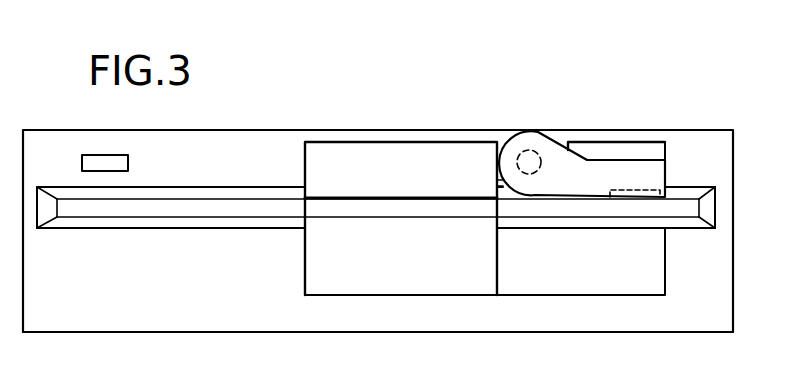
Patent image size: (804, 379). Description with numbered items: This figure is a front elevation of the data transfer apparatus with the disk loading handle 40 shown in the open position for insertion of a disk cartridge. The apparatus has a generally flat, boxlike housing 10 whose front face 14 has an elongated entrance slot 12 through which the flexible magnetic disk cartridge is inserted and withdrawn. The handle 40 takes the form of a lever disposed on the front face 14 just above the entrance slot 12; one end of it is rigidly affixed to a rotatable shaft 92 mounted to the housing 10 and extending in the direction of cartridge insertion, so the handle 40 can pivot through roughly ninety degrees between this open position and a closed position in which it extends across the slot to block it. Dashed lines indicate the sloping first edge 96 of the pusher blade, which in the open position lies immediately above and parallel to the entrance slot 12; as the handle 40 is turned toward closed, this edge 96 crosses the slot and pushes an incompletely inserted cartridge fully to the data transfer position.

The housing 10 is at (669, 127).
The entrance slot 12 is at (198, 200).
The front face 14 is at (681, 322).
The disk loading handle 40 is at (594, 167).
The rotatable shaft 92 is at (521, 150).
The sloping first edge 96 is at (628, 197).